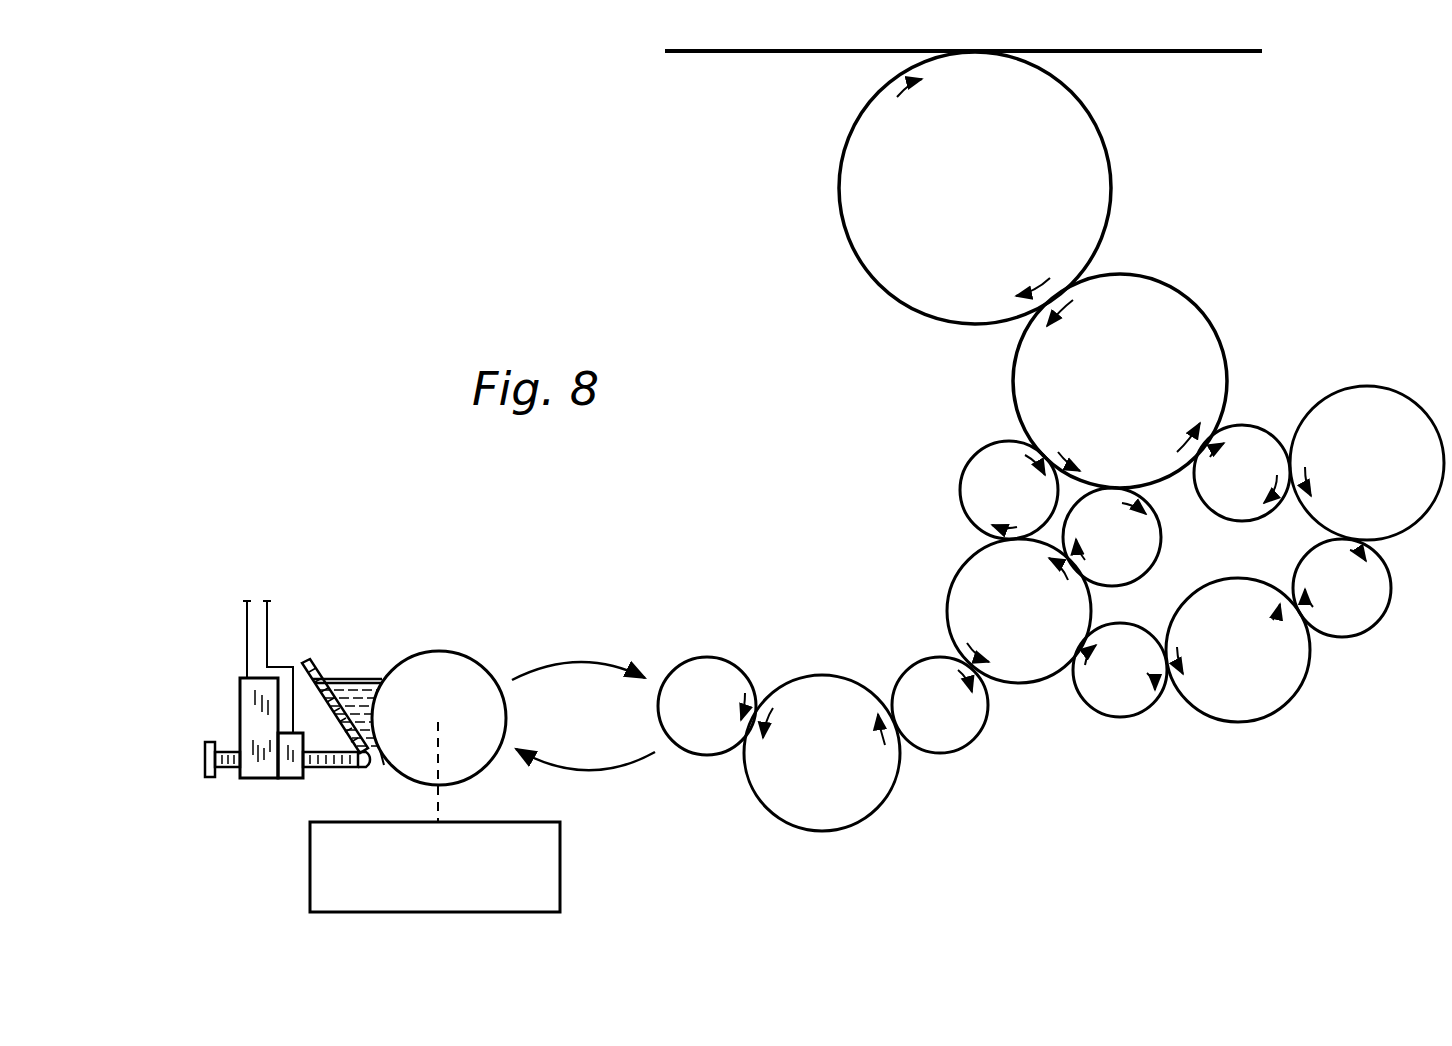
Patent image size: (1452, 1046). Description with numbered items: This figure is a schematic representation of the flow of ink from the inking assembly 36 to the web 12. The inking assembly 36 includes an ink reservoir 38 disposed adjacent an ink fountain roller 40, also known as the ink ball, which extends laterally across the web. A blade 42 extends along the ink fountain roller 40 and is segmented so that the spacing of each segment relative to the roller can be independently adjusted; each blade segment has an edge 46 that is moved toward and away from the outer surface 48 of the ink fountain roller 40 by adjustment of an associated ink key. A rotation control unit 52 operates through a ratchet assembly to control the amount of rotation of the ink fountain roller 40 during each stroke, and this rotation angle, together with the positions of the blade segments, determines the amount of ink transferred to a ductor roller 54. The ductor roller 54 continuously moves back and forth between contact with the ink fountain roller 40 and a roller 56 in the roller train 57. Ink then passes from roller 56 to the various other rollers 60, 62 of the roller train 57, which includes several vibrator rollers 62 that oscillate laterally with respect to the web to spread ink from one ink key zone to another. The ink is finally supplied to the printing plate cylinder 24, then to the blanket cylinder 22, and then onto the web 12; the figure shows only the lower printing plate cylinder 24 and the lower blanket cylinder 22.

The web 12 is at (750, 53).
The blanket cylinder 22 is at (1105, 183).
The printing plate cylinder 24 is at (1200, 325).
The inking assembly 36 is at (265, 808).
The ink reservoir 38 is at (362, 678).
The ink fountain roller 40 is at (452, 699).
The blade 42 is at (318, 662).
The edge 46 is at (343, 768).
The outer surface 48 is at (383, 760).
The rotation control unit 52 is at (522, 822).
The ductor roller 54 is at (702, 667).
The roller 56 is at (840, 687).
The roller train 57 is at (1053, 732).
The rollers 60 is at (1393, 392).
The vibrator rollers 62 is at (982, 447).